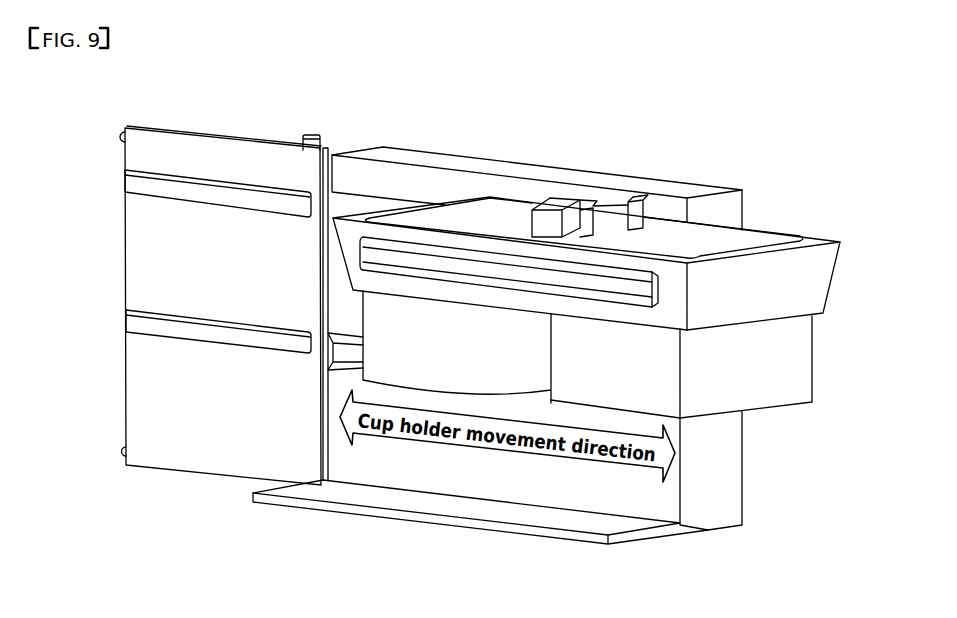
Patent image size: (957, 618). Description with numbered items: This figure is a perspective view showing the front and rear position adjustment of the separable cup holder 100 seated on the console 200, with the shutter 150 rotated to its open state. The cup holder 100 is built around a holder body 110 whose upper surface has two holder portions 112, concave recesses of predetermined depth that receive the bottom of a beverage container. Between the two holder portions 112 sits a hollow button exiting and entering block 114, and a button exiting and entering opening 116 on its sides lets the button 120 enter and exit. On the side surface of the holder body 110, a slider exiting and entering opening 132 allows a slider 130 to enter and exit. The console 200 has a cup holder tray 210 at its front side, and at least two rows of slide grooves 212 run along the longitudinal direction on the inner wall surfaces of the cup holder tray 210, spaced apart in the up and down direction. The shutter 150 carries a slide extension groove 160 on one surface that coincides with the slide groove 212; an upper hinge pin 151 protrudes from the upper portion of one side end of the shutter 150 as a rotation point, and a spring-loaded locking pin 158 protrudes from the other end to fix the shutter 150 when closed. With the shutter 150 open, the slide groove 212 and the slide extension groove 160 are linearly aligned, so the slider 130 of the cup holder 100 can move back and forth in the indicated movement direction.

The separable cup holder 100 is at (623, 338).
The holder body 110 is at (802, 275).
The holder portion 112 is at (497, 213).
The button exiting and entering block 114 is at (618, 212).
The button exiting and entering opening 116 is at (580, 227).
The button 120 is at (553, 222).
The slider 130 is at (628, 288).
The slider exiting and entering opening 132 is at (647, 305).
The shutter 150 is at (169, 270).
The upper hinge pin 151 is at (310, 134).
The locking pin 158 is at (122, 137).
The slide extension groove 160 is at (142, 323).
The console 200 is at (475, 158).
The cup holder tray 210 is at (418, 503).
The slide groove 212 is at (352, 207).